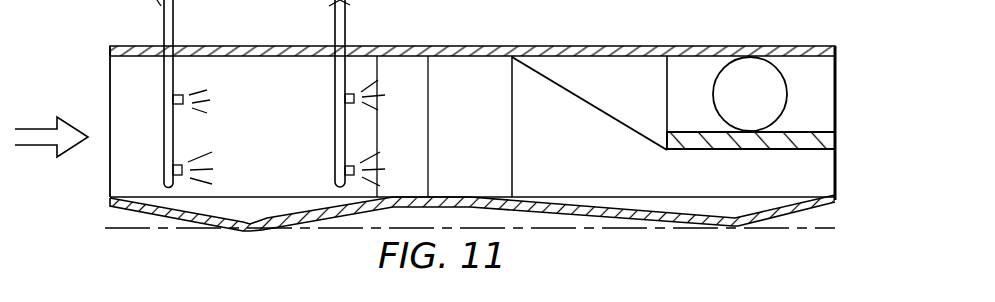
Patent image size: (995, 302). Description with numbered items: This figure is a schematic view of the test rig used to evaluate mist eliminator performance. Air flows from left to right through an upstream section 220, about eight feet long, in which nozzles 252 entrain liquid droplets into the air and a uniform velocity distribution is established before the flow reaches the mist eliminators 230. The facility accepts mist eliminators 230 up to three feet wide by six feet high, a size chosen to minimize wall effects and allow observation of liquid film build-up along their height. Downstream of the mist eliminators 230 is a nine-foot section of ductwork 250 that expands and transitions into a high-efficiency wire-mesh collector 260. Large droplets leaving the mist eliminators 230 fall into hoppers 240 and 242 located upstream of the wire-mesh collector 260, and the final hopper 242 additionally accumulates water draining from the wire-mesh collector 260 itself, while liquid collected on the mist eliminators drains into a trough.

The upstream section 220 is at (292, 135).
The nozzles 252 is at (290, 98).
The mist eliminators 230 is at (484, 142).
The hopper 240 is at (288, 172).
The final hopper 242 is at (730, 208).
The section of ductwork 250 is at (642, 92).
The wire-mesh collector 260 is at (797, 132).